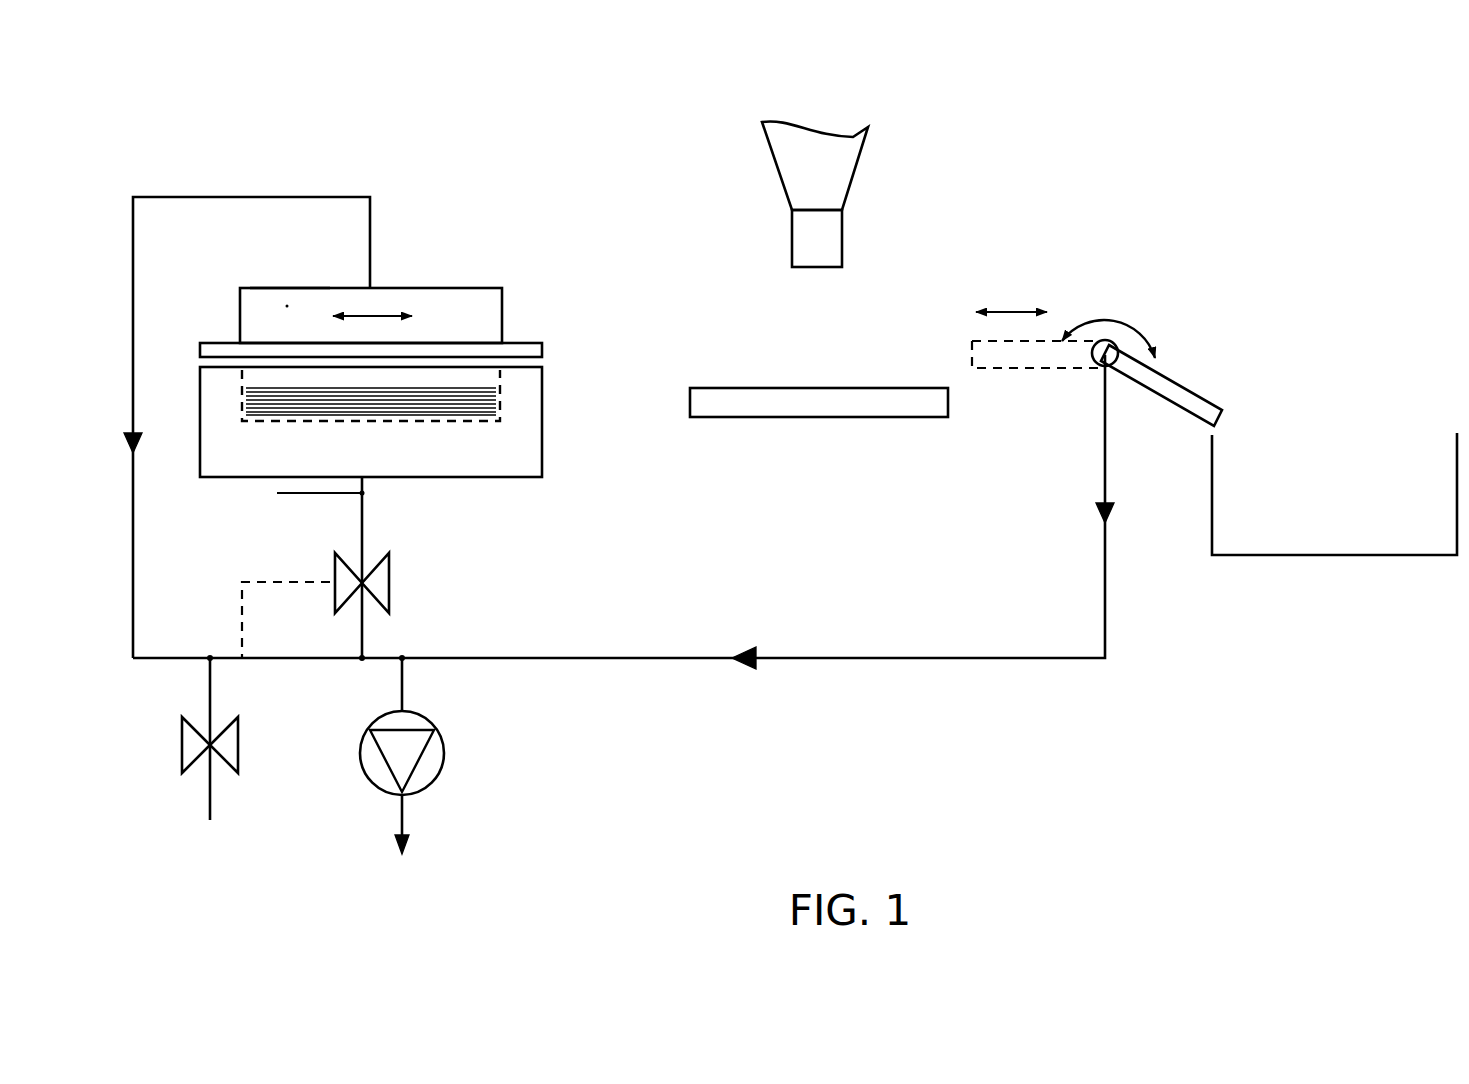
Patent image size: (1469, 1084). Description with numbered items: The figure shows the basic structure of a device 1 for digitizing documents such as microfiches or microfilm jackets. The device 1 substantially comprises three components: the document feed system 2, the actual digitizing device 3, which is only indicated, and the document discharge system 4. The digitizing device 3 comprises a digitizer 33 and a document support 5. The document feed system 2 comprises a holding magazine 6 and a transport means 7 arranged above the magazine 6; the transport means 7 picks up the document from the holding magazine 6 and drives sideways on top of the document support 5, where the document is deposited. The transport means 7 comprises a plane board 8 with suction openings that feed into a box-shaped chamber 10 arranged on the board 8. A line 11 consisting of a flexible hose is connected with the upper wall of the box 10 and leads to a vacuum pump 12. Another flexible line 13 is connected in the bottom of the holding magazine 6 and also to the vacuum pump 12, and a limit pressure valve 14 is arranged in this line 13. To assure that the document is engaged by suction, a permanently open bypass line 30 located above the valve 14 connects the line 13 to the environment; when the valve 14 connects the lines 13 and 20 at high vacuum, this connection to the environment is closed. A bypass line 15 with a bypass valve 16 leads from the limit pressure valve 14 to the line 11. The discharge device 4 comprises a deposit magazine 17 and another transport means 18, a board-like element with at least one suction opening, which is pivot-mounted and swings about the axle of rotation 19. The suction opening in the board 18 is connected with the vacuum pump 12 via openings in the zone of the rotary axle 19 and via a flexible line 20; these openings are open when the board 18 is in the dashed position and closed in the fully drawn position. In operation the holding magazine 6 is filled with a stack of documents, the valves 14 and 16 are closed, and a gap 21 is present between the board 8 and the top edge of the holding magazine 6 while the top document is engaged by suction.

The device 1 is at (954, 154).
The document feed system 2 is at (463, 246).
The digitizing device 3 is at (762, 236).
The document discharge system 4 is at (1333, 382).
The document support 5 is at (790, 400).
The holding magazine 6 is at (538, 442).
The transport means 7 is at (487, 303).
The plane board 8 is at (538, 345).
The box-shaped chamber 10 is at (281, 288).
The line 11 is at (241, 197).
The vacuum pump 12 is at (444, 753).
The line 13 is at (363, 522).
The limit pressure valve 14 is at (390, 580).
The bypass line 15 is at (268, 582).
The bypass valve 16 is at (238, 745).
The deposit magazine 17 is at (1340, 557).
The transport means 18 is at (1188, 382).
The axle of rotation 19 is at (1108, 341).
The line 20 is at (874, 660).
The gap 21 is at (538, 366).
The bypass line 30 is at (320, 494).
The digitizer 33 is at (802, 181).